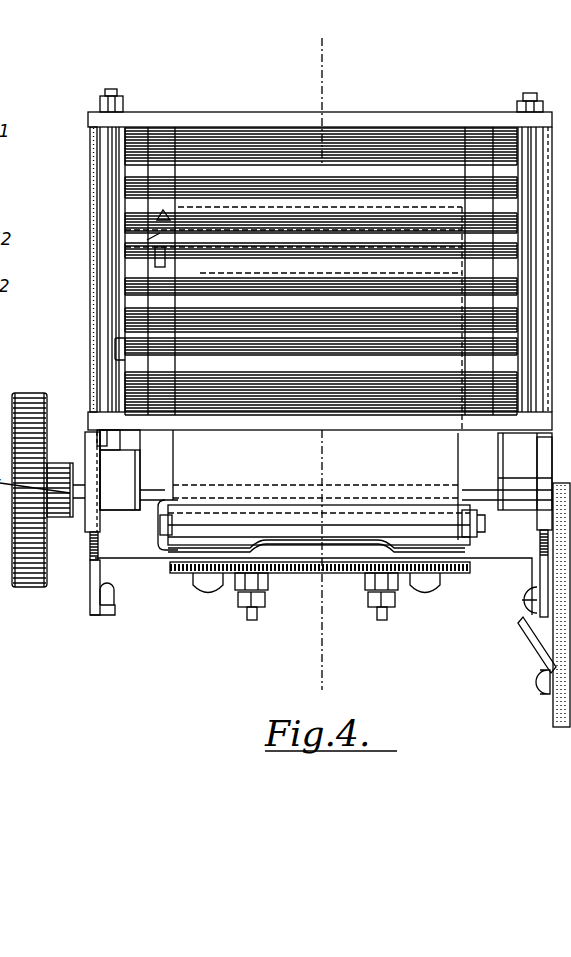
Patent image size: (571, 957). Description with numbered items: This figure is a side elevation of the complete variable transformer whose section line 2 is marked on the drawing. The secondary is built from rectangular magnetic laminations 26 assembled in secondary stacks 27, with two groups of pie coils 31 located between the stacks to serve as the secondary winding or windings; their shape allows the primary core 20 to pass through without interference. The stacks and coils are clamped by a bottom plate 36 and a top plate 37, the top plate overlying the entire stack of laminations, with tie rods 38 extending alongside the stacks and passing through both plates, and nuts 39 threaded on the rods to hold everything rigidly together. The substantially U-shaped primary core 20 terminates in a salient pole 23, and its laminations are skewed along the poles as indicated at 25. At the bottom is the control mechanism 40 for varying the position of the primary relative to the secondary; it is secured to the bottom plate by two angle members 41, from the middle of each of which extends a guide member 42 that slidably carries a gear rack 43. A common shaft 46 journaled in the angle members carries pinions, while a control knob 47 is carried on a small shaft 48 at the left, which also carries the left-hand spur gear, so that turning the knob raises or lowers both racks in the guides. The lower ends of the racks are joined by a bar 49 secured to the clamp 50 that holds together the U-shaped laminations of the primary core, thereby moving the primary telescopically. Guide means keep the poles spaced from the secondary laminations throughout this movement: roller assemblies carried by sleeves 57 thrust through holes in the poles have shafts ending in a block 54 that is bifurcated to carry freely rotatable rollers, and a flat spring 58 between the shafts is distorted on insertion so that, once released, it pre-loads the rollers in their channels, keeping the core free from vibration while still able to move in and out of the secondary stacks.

The section line 2 is at (345, 51).
The primary core 20 is at (278, 537).
The salient pole 23 is at (375, 203).
The skewed laminations 25 is at (239, 215).
The magnetic laminations 26 is at (127, 318).
The secondary stacks 27 is at (113, 352).
The pie coils 31 is at (157, 236).
The bottom plate 36 is at (336, 424).
The top plate 37 is at (492, 122).
The tie rods 38 is at (112, 155).
The nuts 39 is at (120, 97).
The control mechanism 40 is at (104, 513).
The angle members 41 is at (84, 447).
The guide members 42 is at (90, 167).
The gear rack 43 is at (100, 545).
The common shaft 46 is at (483, 498).
The control knob 47 is at (32, 586).
The small shaft 48 is at (197, 484).
The bar 49 is at (283, 561).
The clamp 50 is at (455, 548).
The block 54 is at (143, 242).
The sleeves 57 is at (150, 207).
The flat spring 58 is at (307, 232).